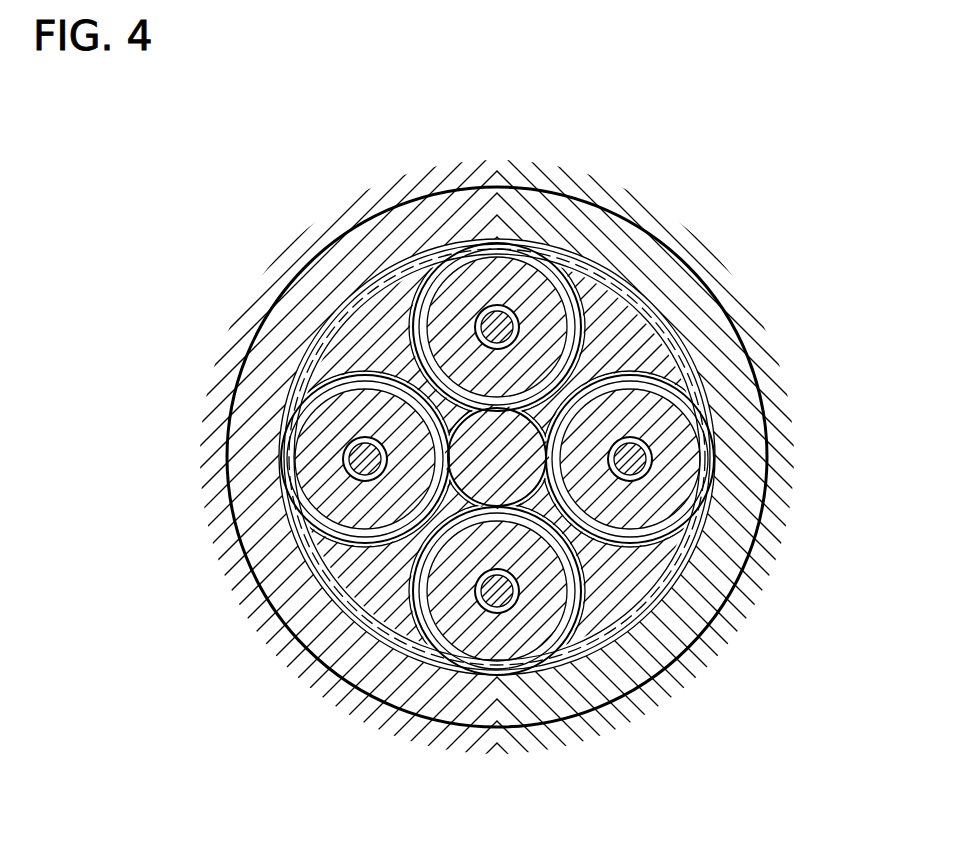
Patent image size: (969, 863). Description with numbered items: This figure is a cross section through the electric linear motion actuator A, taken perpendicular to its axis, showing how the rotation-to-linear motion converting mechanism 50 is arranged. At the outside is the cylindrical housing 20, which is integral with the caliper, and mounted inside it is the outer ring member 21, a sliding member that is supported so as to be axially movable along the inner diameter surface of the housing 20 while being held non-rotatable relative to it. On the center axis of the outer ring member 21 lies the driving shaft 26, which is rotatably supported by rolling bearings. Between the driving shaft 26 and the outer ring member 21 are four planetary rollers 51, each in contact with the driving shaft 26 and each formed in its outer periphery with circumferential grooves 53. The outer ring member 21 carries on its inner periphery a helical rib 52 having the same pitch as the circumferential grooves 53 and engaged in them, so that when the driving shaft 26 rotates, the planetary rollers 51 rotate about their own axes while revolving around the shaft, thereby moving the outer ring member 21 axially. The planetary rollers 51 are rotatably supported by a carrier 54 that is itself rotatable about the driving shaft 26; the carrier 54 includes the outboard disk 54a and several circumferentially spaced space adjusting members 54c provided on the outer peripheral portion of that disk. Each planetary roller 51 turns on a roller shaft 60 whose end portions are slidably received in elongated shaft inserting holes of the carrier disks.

The electric linear motion actuator A is at (257, 257).
The cylindrical housing 20 is at (325, 243).
The outer ring member 21 is at (392, 248).
The driving shaft 26 is at (455, 437).
The rotation-to-linear motion converting mechanism 50 is at (492, 237).
The planetary rollers 51 is at (517, 265).
The helical rib 52 is at (567, 252).
The circumferential grooves 53 is at (552, 262).
The carrier 54 is at (652, 297).
The outboard disk 54a is at (690, 382).
The space adjusting members 54c is at (653, 343).
The roller shafts 60 is at (487, 316).